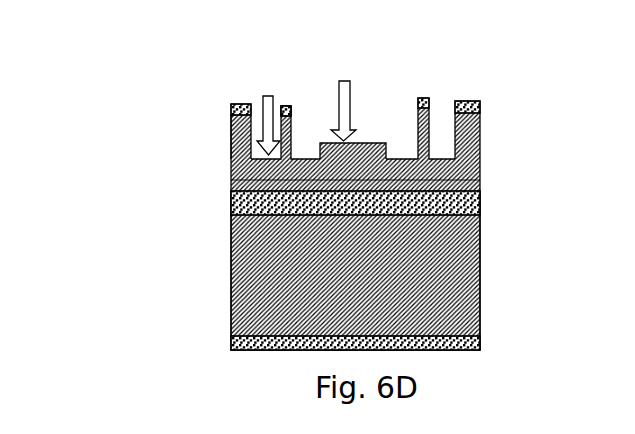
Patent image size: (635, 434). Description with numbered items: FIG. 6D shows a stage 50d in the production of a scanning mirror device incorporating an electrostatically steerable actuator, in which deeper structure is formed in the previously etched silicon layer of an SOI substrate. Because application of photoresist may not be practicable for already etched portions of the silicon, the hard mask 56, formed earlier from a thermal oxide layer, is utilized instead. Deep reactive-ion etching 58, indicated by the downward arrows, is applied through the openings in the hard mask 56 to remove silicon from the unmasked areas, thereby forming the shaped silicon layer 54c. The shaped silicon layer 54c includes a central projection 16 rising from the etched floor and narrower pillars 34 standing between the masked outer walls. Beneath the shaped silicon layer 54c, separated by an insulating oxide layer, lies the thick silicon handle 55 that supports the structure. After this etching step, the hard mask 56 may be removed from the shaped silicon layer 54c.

The device structure 50d is at (178, 163).
The hard mask 56 is at (224, 97).
The shaped silicon layer 54c is at (473, 161).
The central projection 16 is at (357, 134).
The pillars 34 is at (418, 115).
The deep reactive-ion etching 58 is at (332, 83).
The silicon handle 55 is at (223, 281).